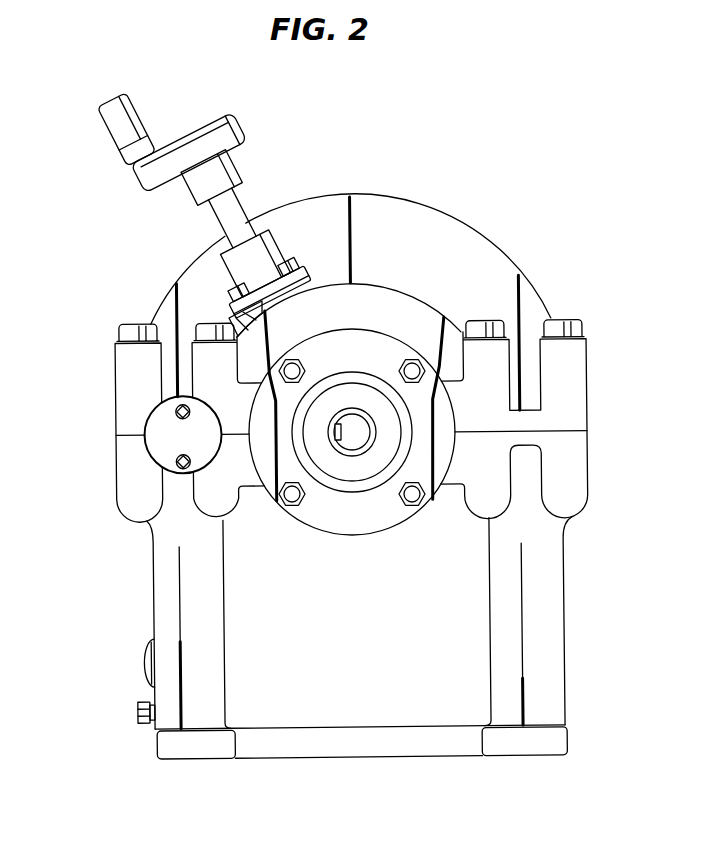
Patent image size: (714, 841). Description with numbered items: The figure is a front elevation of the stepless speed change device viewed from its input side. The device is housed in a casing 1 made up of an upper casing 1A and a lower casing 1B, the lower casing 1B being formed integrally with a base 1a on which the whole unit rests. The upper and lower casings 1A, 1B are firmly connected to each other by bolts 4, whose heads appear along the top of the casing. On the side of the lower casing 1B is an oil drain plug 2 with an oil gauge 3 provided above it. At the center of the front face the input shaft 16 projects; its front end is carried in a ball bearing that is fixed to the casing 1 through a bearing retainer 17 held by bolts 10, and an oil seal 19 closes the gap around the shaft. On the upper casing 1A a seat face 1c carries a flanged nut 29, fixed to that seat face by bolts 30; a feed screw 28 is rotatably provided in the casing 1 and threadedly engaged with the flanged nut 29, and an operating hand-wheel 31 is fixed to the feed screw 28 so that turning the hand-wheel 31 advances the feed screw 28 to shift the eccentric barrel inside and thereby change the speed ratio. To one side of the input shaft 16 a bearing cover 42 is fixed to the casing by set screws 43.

The casing 1 is at (599, 433).
The upper casing 1A is at (510, 268).
The lower casing 1B is at (548, 568).
The base 1a is at (552, 738).
The seat face 1c is at (237, 311).
The oil drain plug 2 is at (133, 703).
The oil gauge 3 is at (145, 657).
The bolts 4 is at (574, 320).
The bolts 10 is at (414, 500).
The input shaft 16 is at (356, 441).
The bearing retainer 17 is at (443, 408).
The oil seal 19 is at (334, 466).
The feed screw 28 is at (241, 206).
The flanged nut 29 is at (279, 255).
The bolts 30 is at (309, 268).
The operating hand-wheel 31 is at (247, 122).
The bearing cover 42 is at (158, 427).
The set screws 43 is at (178, 404).